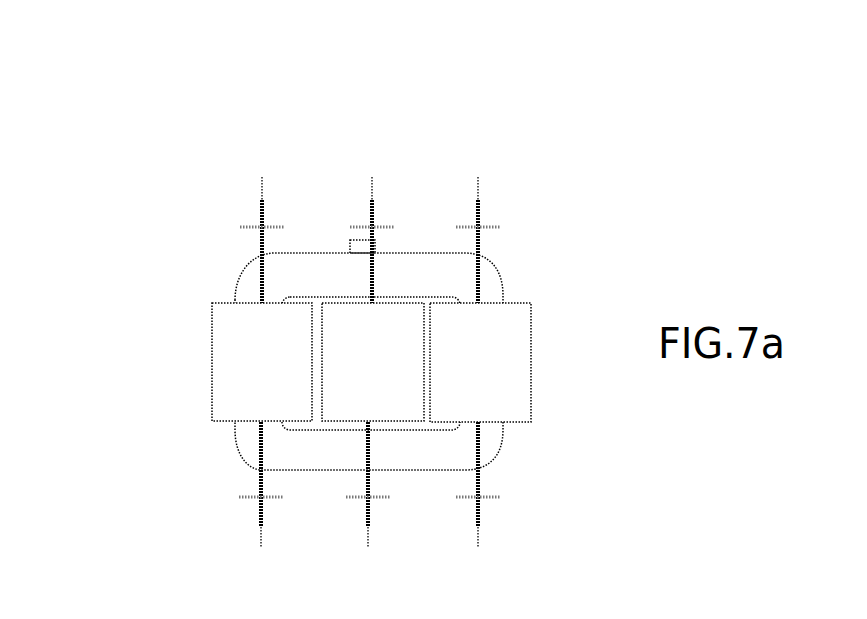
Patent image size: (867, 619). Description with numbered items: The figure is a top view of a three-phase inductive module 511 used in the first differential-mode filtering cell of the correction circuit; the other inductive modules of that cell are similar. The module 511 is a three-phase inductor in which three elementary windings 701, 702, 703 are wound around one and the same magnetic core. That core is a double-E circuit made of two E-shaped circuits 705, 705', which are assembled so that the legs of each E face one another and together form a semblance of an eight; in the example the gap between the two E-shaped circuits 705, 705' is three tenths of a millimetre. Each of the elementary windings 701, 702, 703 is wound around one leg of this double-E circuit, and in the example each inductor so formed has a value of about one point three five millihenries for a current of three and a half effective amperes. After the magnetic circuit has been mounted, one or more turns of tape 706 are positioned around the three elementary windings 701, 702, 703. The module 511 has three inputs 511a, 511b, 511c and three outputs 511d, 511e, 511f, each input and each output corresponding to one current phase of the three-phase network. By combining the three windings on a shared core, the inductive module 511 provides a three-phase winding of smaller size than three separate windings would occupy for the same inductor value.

The three-phase inductive module 511 is at (185, 277).
The first input 511a is at (261, 526).
The second input 511b is at (368, 530).
The third input 511c is at (478, 530).
The first output 511d is at (262, 181).
The second output 511e is at (372, 181).
The third output 511f is at (478, 182).
The elementary winding 701 is at (212, 354).
The elementary winding 702 is at (386, 372).
The elementary winding 703 is at (530, 396).
The E-shaped circuit 705 is at (412, 292).
The E-shaped circuit 705' is at (416, 392).
The tape 706 is at (336, 250).